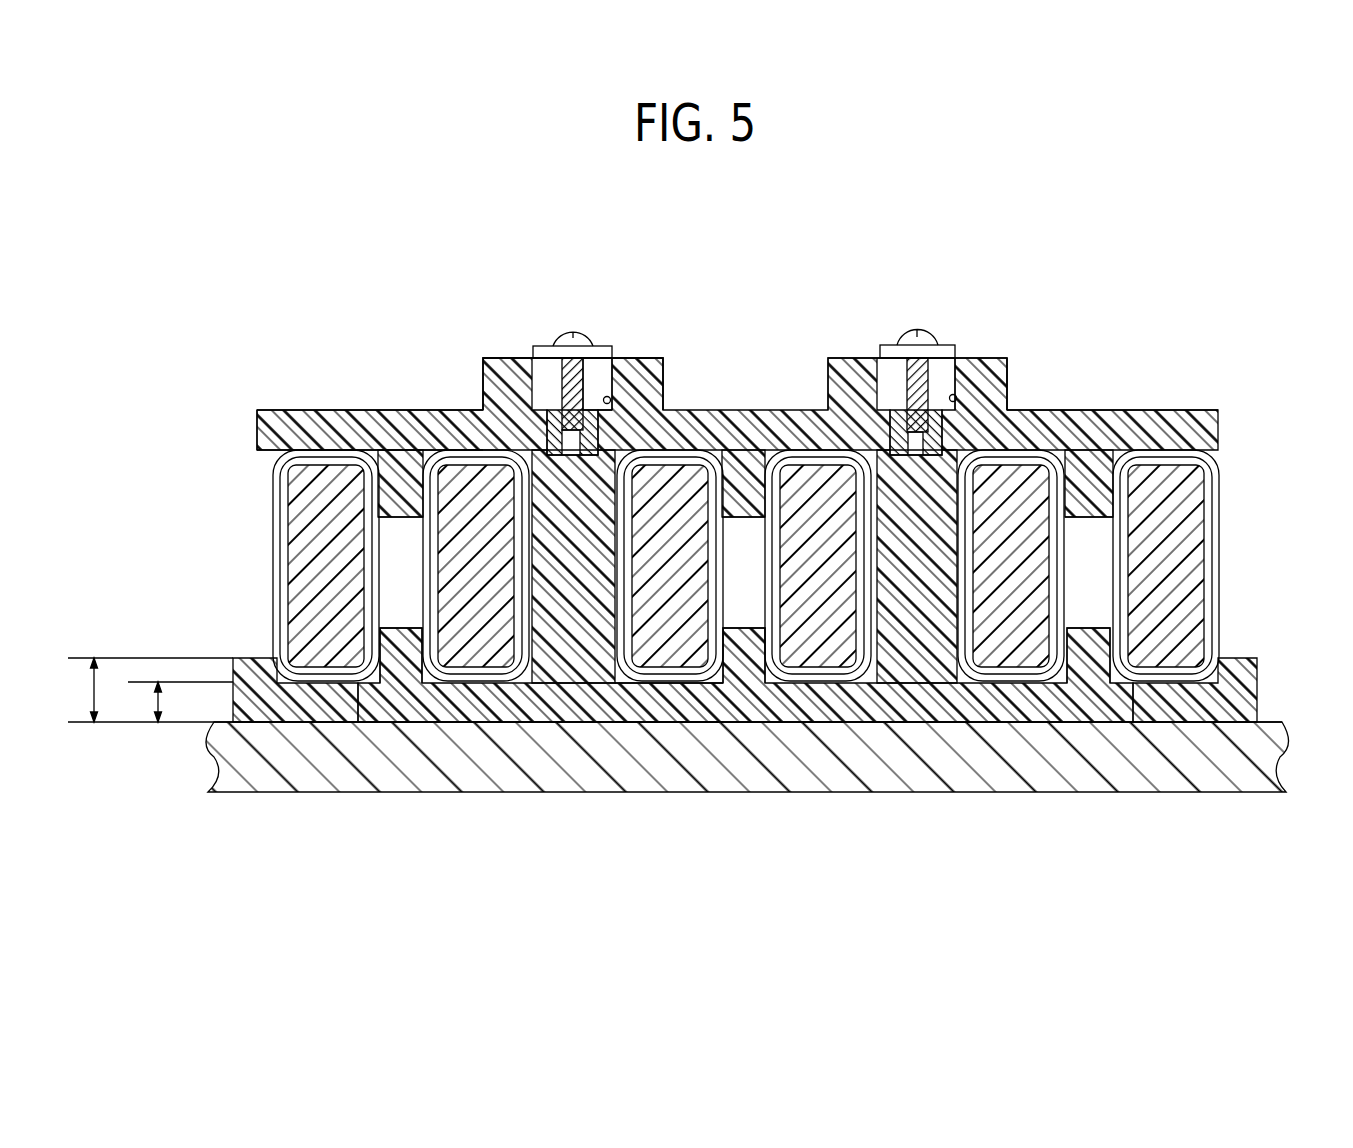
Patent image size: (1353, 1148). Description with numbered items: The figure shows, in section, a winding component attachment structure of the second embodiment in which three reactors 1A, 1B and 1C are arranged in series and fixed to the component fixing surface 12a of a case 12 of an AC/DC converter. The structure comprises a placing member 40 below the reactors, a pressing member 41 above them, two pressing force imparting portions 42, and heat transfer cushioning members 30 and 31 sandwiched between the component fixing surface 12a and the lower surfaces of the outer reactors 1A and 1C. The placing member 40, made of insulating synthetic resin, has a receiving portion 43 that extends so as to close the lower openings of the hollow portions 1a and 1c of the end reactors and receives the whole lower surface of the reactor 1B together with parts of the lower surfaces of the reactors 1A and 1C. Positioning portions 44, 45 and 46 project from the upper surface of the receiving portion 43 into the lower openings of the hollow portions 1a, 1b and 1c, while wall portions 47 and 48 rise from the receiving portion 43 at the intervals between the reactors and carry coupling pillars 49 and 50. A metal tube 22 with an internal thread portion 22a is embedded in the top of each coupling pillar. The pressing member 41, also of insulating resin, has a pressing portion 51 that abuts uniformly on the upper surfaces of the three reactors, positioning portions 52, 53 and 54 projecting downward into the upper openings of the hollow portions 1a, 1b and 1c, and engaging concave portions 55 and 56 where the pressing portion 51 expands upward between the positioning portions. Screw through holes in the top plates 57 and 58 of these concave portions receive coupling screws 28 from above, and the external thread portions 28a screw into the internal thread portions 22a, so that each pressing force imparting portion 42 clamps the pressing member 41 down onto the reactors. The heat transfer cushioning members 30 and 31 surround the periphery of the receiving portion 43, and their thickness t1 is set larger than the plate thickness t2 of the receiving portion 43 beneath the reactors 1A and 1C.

The reactor 1A is at (312, 443).
The reactor 1B is at (715, 443).
The reactor 1C is at (1148, 443).
The hollow portion 1a is at (400, 551).
The hollow portion 1b is at (743, 551).
The hollow portion 1c is at (1089, 551).
The case 12 is at (1267, 757).
The component fixing surface 12a is at (1267, 722).
The metal tube 22 is at (488, 368).
The internal thread portion 22a is at (611, 400).
The coupling screw 28 is at (572, 347).
The external thread portion 28a is at (560, 388).
The heat transfer cushioning member 30 is at (290, 697).
The heat transfer cushioning member 31 is at (1200, 697).
The placing member 40 is at (835, 697).
The pressing member 41 is at (1200, 410).
The pressing force imparting portion 42 is at (615, 380).
The receiving portion 43 is at (645, 695).
The positioning portion 44 is at (403, 660).
The positioning portion 45 is at (740, 660).
The positioning portion 46 is at (1090, 670).
The wall portion 47 is at (573, 660).
The wall portion 48 is at (920, 573).
The coupling pillar 49 is at (540, 437).
The coupling pillar 50 is at (995, 410).
The pressing portion 51 is at (368, 413).
The positioning portion 52 is at (403, 497).
The positioning portion 53 is at (743, 473).
The positioning portion 54 is at (1093, 497).
The engaging concave portion 55 is at (600, 393).
The engaging concave portion 56 is at (1005, 360).
The top plate 57 is at (592, 415).
The top plate 58 is at (945, 388).
The thickness t1 is at (150, 690).
The plate thickness t2 is at (152, 702).